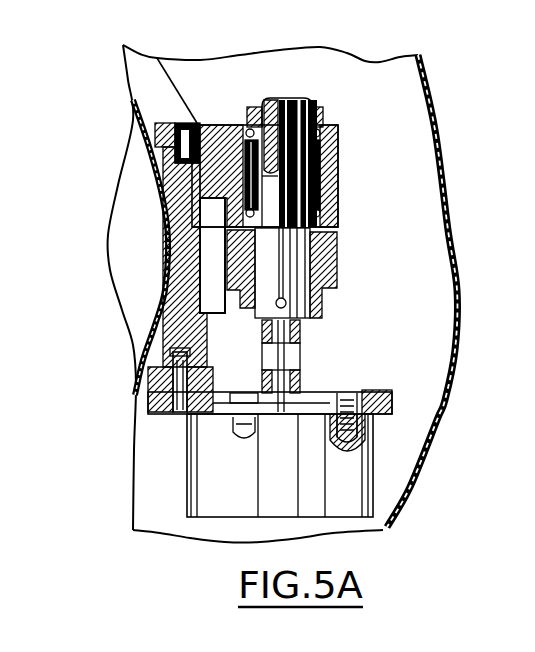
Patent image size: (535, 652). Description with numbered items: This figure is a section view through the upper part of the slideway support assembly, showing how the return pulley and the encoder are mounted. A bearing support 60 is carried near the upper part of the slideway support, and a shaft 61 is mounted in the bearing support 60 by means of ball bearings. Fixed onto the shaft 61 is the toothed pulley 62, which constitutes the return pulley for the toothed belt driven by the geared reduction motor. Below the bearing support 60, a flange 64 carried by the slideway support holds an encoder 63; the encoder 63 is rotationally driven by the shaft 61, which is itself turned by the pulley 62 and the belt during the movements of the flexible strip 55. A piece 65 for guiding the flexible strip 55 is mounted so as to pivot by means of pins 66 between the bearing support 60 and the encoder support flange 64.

The flexible strip 55 is at (160, 280).
The bearing support 60 is at (337, 163).
The shaft 61 is at (308, 100).
The toothed pulley 62 is at (327, 280).
The encoder 63 is at (353, 478).
The flange 64 is at (310, 402).
The guiding piece 65 is at (160, 185).
The pins 66 is at (193, 123).